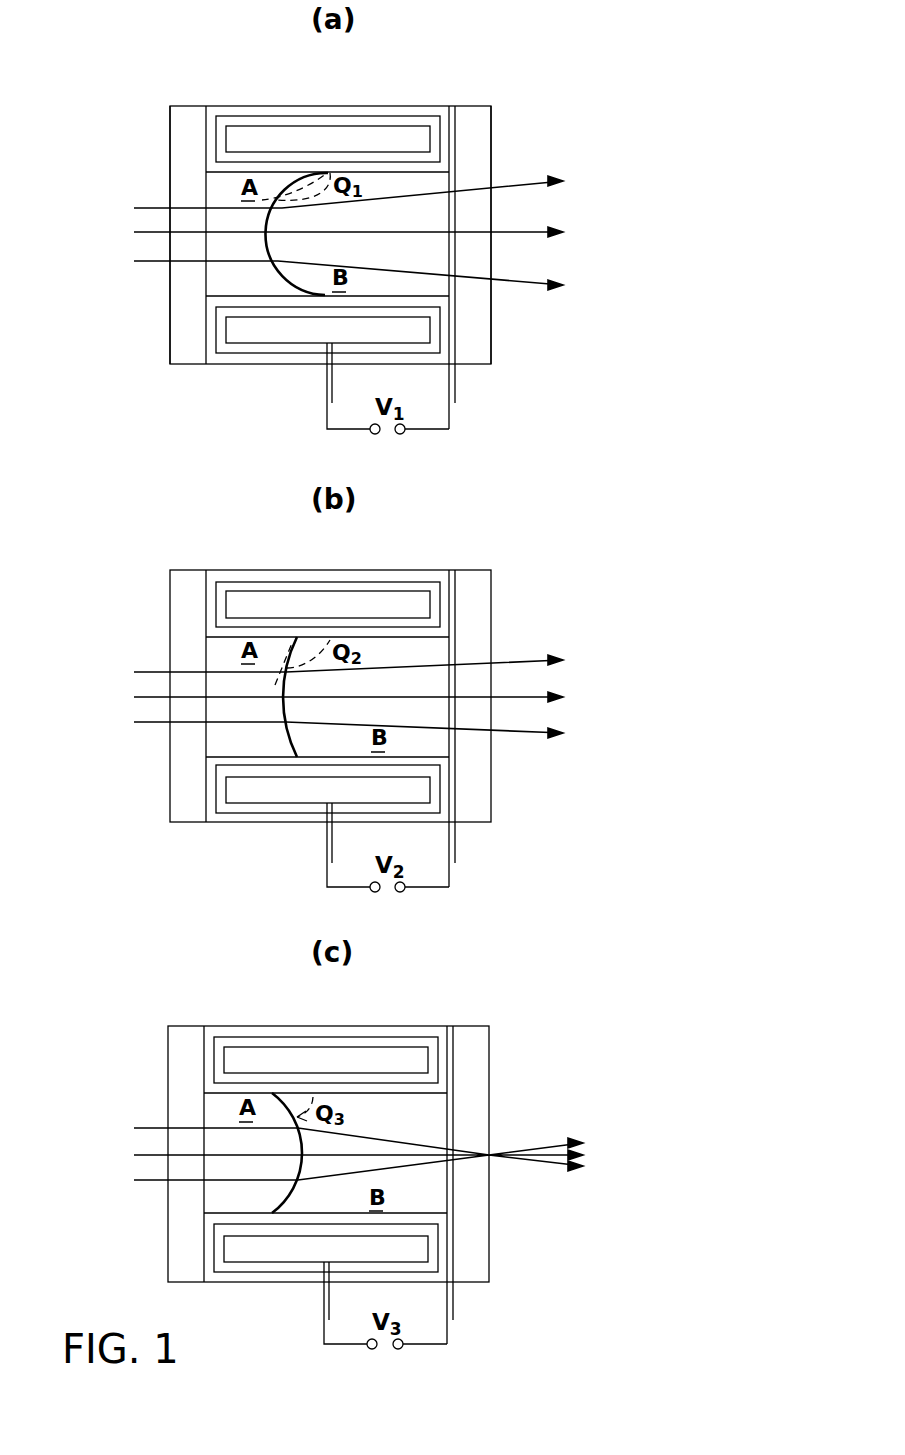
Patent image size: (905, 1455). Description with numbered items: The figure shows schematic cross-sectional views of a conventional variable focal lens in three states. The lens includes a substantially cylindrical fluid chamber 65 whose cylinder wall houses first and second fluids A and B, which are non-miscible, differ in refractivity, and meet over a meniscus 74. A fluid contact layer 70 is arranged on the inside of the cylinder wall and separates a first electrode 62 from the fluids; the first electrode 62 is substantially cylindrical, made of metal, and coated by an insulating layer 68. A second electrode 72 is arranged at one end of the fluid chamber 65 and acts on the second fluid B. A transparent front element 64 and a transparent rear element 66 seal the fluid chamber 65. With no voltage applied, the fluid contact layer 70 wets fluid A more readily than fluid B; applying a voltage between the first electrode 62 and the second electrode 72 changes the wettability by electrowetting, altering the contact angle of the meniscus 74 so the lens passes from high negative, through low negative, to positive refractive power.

The first electrode 62 is at (387, 135).
The transparent front element 64 is at (188, 125).
The fluid chamber 65 is at (423, 183).
The transparent rear element 66 is at (470, 125).
The insulating layer 68 is at (257, 157).
The fluid contact layer 70 is at (303, 168).
The second electrode 72 is at (453, 288).
The meniscus 74 is at (290, 275).